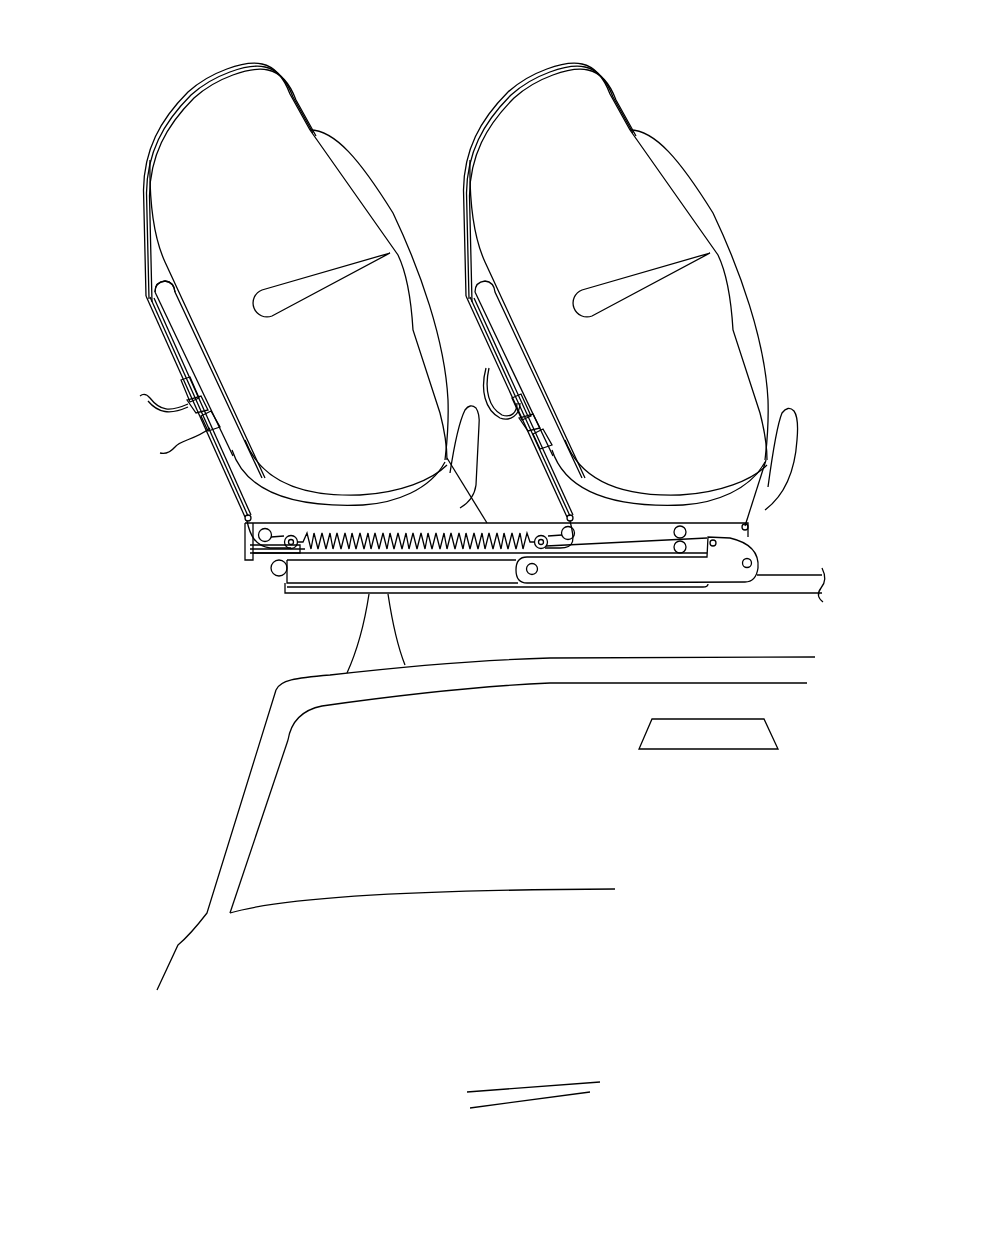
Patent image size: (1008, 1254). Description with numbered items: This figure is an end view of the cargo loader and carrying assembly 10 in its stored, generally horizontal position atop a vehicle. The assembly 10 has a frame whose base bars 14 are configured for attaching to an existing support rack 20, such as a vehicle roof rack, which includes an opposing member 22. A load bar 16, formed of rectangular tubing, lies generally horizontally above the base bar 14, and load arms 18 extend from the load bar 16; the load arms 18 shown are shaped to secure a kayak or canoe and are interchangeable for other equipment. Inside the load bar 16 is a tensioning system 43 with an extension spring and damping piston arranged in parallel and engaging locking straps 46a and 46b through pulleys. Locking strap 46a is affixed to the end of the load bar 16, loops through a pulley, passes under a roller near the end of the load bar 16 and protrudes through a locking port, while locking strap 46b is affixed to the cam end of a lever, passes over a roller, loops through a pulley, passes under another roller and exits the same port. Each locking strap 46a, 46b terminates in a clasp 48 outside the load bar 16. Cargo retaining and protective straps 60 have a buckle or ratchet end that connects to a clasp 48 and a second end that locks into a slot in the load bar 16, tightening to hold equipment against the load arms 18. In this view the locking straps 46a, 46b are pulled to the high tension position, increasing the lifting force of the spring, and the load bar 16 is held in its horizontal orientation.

The cargo loader and carrying assembly 10 is at (143, 50).
The cargo retaining and protective strap 60 is at (268, 62).
The load arm 18 is at (168, 302).
The clasp 48 is at (192, 430).
The locking strap 46a is at (222, 480).
The locking strap 46b is at (557, 494).
The load bar 16 is at (755, 521).
The tensioning system 43 is at (247, 555).
The base bar 14 is at (292, 571).
The support rack 20 is at (353, 613).
The opposing member 22 is at (763, 585).